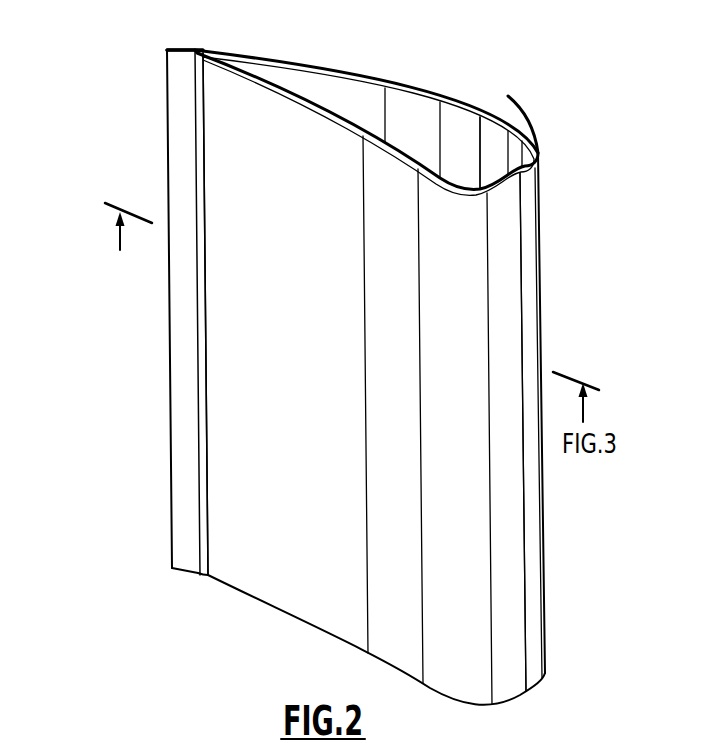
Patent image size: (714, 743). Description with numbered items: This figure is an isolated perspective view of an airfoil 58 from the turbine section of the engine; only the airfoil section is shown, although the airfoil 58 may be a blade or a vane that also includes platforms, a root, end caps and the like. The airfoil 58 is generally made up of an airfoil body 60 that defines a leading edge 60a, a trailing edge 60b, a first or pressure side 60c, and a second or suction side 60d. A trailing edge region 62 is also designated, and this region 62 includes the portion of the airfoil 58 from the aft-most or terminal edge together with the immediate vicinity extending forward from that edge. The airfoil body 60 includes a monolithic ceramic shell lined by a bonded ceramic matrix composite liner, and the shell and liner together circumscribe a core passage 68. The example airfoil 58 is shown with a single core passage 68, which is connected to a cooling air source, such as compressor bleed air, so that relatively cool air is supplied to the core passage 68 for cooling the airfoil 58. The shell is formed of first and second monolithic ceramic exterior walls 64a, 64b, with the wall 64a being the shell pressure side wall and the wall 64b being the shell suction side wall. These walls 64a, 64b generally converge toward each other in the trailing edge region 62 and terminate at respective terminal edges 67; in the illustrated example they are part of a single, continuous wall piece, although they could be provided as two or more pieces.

The airfoil 58 is at (335, 352).
The airfoil body 60 is at (346, 352).
The leading edge 60a is at (520, 250).
The trailing edge 60b is at (160, 105).
The pressure side 60c is at (240, 368).
The suction side 60d is at (513, 110).
The trailing edge region 62 is at (168, 47).
The first monolithic ceramic exterior wall 64a is at (355, 125).
The second monolithic ceramic exterior wall 64b is at (456, 97).
The terminal edges 67 is at (165, 62).
The core passage 68 is at (490, 158).